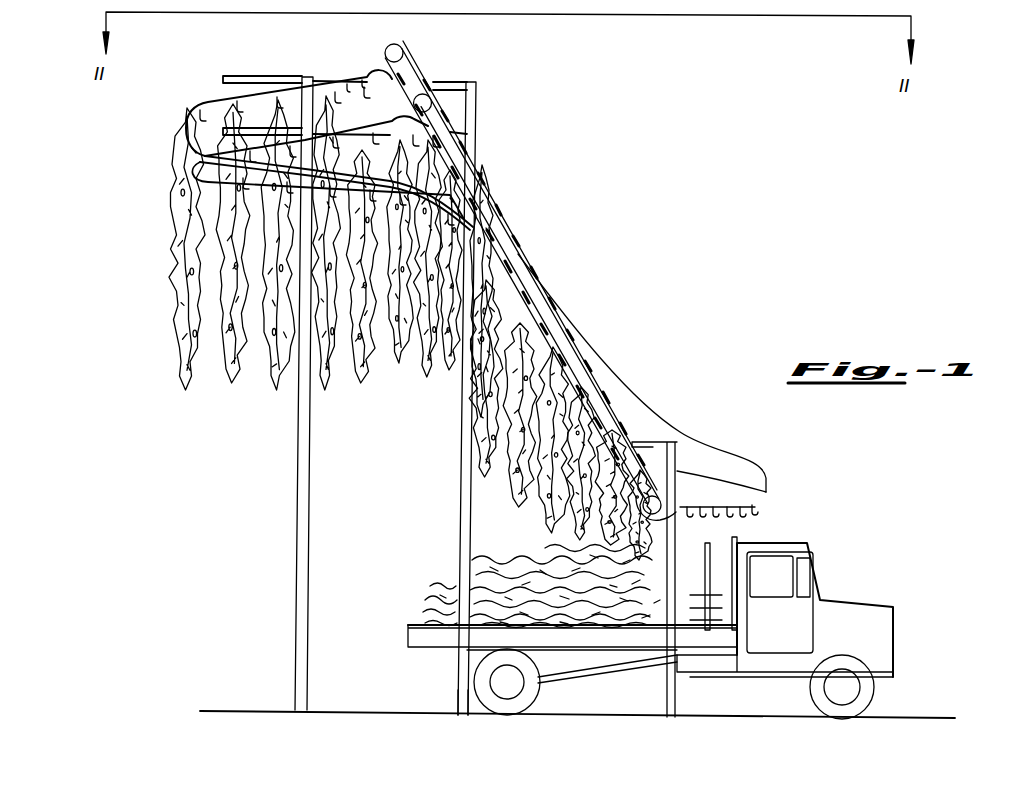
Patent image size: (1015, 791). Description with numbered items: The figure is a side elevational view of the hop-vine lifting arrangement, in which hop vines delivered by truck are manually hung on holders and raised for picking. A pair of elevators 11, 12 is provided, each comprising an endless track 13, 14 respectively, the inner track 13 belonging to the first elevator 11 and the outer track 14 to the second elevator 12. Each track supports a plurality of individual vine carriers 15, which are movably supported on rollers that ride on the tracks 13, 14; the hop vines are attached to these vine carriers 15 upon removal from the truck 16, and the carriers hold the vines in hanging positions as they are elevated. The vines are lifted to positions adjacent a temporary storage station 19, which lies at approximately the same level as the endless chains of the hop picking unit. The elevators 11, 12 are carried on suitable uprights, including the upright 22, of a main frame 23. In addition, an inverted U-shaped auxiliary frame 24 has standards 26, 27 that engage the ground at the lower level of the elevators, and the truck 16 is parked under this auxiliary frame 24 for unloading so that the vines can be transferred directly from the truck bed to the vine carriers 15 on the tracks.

The elevator 11 is at (514, 242).
The elevator 12 is at (485, 220).
The endless track 13 is at (203, 174).
The endless track 14 is at (192, 110).
The vine carrier 15 is at (744, 520).
The truck 16 is at (858, 608).
The temporary storage station 19 is at (373, 117).
The upright 22 is at (294, 517).
The main frame 23 is at (461, 521).
The auxiliary frame 24 is at (636, 438).
The standard 26 is at (462, 682).
The standard 27 is at (674, 554).